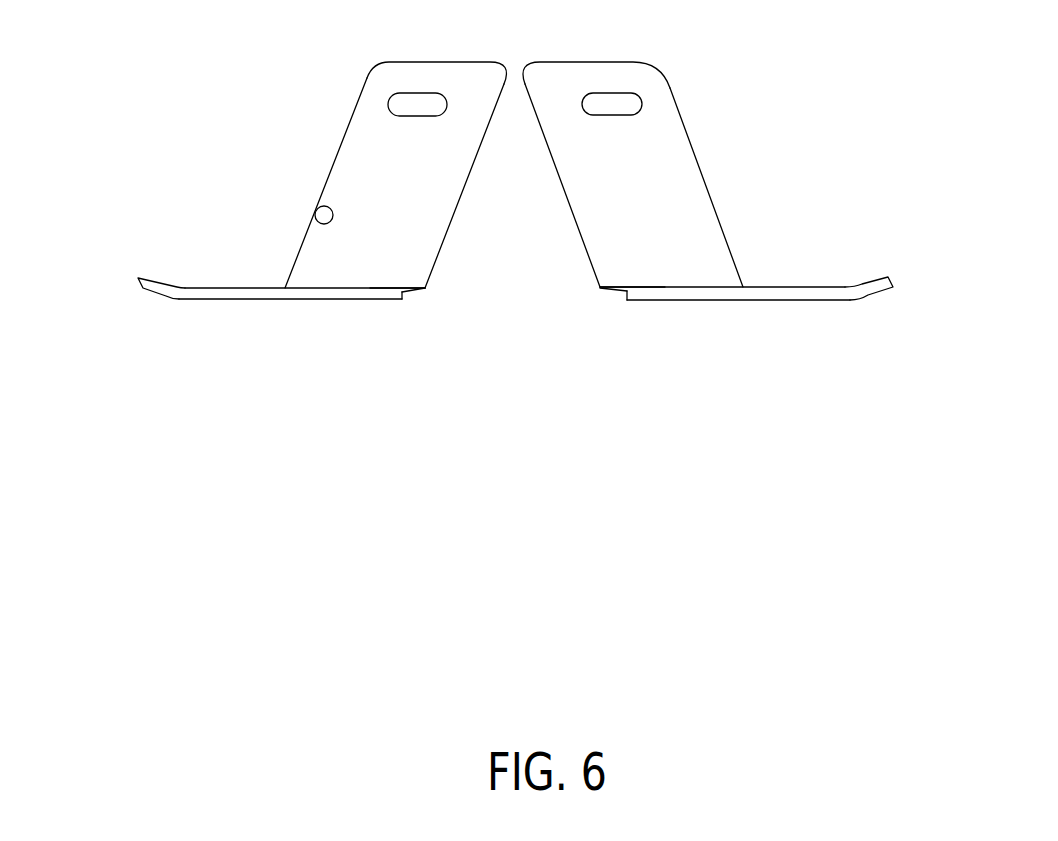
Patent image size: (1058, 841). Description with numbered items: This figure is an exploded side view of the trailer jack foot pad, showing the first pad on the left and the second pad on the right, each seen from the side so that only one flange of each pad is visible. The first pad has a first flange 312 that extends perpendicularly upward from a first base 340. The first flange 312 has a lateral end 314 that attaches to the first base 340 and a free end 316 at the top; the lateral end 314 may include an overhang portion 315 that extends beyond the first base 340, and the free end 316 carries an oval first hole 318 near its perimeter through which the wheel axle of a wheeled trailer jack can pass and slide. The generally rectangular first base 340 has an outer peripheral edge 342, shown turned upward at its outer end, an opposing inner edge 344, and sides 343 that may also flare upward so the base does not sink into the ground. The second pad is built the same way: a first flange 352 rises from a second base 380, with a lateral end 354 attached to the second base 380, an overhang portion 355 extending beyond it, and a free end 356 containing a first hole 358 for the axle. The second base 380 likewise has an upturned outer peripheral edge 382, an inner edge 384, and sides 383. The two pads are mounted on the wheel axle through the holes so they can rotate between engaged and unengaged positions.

The first flange 312 is at (427, 183).
The lateral end 314 is at (378, 287).
The overhang portion 315 is at (420, 292).
The free end 316 is at (468, 90).
The first hole 318 is at (398, 107).
The first base 340 is at (237, 288).
The outer peripheral edge 342 is at (138, 280).
The sides 343 is at (265, 299).
The inner edge 344 is at (417, 300).
The first flange 352 is at (653, 186).
The lateral end 354 is at (663, 287).
The overhang portion 355 is at (612, 290).
The free end 356 is at (555, 98).
The first hole 358 is at (625, 105).
The second base 380 is at (775, 287).
The outer peripheral edge 382 is at (893, 275).
The sides 383 is at (723, 295).
The inner edge 384 is at (620, 305).